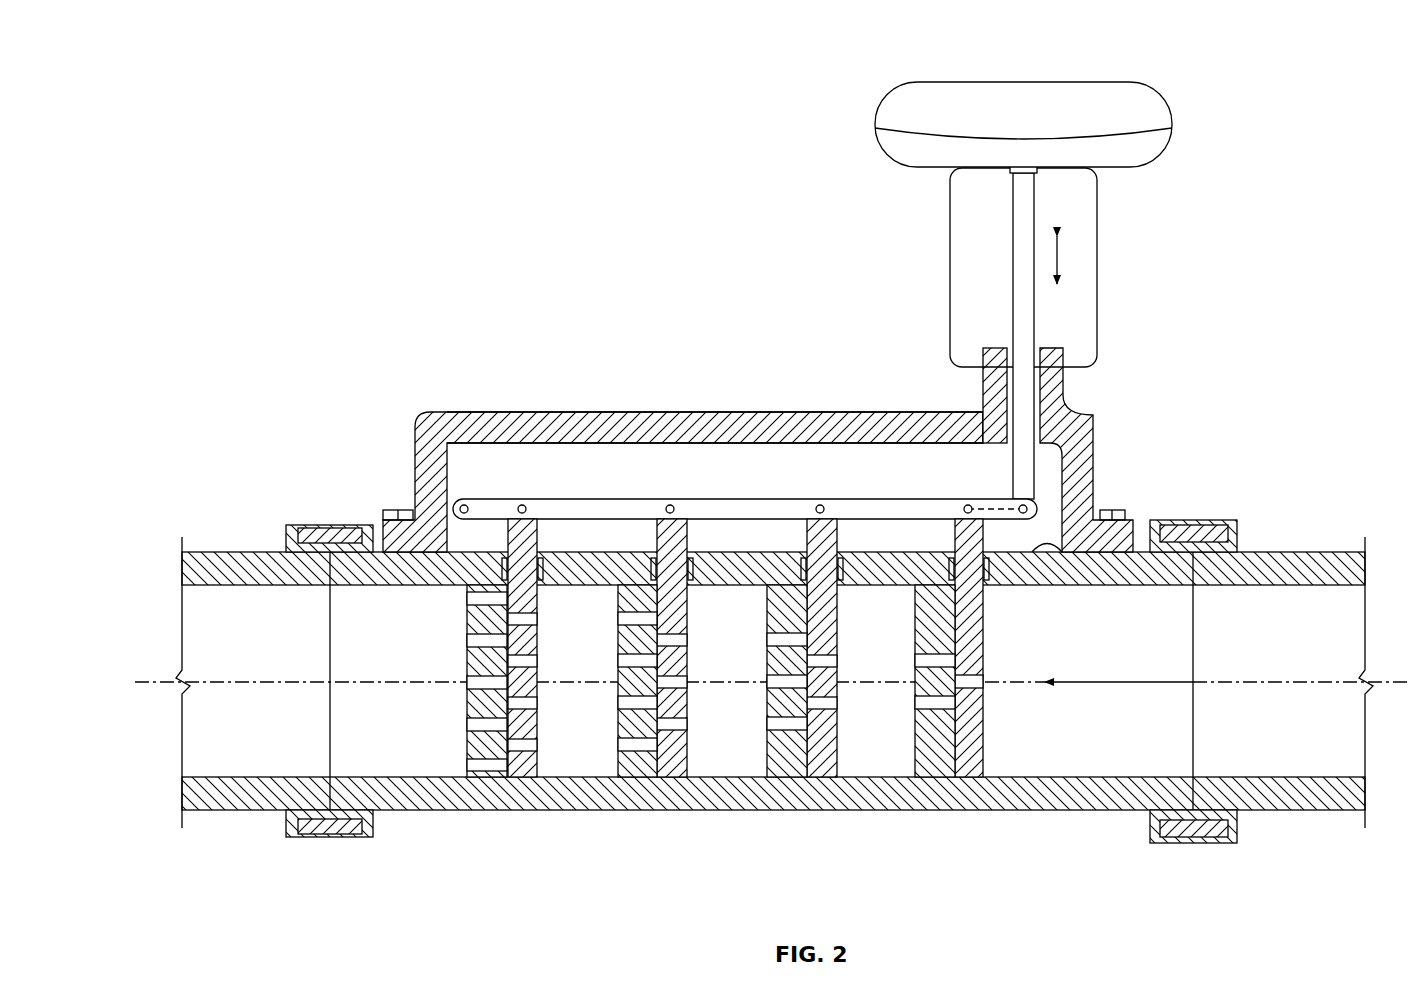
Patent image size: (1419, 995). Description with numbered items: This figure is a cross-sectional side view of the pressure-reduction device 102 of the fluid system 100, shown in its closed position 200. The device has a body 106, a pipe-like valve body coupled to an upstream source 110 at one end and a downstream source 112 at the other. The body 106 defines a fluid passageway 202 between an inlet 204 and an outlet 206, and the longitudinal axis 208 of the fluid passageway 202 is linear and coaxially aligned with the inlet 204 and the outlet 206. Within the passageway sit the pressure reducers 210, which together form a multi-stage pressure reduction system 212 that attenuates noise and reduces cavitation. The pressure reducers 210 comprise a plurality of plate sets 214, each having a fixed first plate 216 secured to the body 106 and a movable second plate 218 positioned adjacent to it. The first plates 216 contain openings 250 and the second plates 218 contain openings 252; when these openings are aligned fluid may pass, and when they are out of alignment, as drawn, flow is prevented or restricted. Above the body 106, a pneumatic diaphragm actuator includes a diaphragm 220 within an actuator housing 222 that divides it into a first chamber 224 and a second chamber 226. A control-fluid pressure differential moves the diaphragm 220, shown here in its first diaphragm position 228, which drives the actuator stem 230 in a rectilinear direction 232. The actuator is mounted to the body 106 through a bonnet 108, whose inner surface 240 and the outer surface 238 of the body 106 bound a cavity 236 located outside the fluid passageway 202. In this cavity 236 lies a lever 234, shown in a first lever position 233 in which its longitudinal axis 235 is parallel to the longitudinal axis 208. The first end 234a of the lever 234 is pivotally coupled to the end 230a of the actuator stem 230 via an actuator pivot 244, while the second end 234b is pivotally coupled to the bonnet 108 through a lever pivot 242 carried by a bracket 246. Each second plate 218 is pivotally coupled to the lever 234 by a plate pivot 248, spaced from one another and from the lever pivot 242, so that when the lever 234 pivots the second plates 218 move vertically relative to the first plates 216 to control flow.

The fluid system 100 is at (240, 93).
The pressure-reduction device 102 is at (360, 168).
The body 106 is at (942, 72).
The bonnet 108 is at (740, 412).
The upstream source 110 is at (1312, 551).
The downstream source 112 is at (245, 814).
The closed position 200 is at (425, 368).
The fluid passageway 202 is at (1119, 712).
The inlet 204 is at (1180, 780).
The outlet 206 is at (345, 792).
The longitudinal axis 208 is at (1385, 682).
The pressure reducers 210 is at (478, 798).
The multi-stage pressure reduction system 212 is at (462, 624).
The plate sets 214 is at (497, 830).
The first plate 216 is at (466, 630).
The second plate 218 is at (530, 556).
The diaphragm 220 is at (888, 120).
The actuator housing 222 is at (930, 170).
The first chamber 224 is at (1021, 112).
The second chamber 226 is at (1106, 152).
The first diaphragm position 228 is at (1132, 126).
The actuator stem 230 is at (1012, 232).
The end of the actuator stem 230a is at (1042, 482).
The rectilinear direction 232 is at (1060, 255).
The first lever position 233 is at (952, 368).
The lever 234 is at (730, 518).
The first end of the lever 234a is at (905, 505).
The second end of the lever 234b is at (488, 515).
The longitudinal axis of the lever 235 is at (1047, 515).
The cavity 236 is at (569, 482).
The outer surface of the body 238 is at (1067, 548).
The inner surface of the bonnet 240 is at (460, 450).
The lever pivot 242 is at (445, 505).
The actuator pivot 244 is at (1047, 450).
The bracket 246 is at (443, 560).
The plate pivots 248 is at (668, 500).
The openings of the first plates 250 is at (478, 683).
The openings of the second plates 252 is at (672, 640).